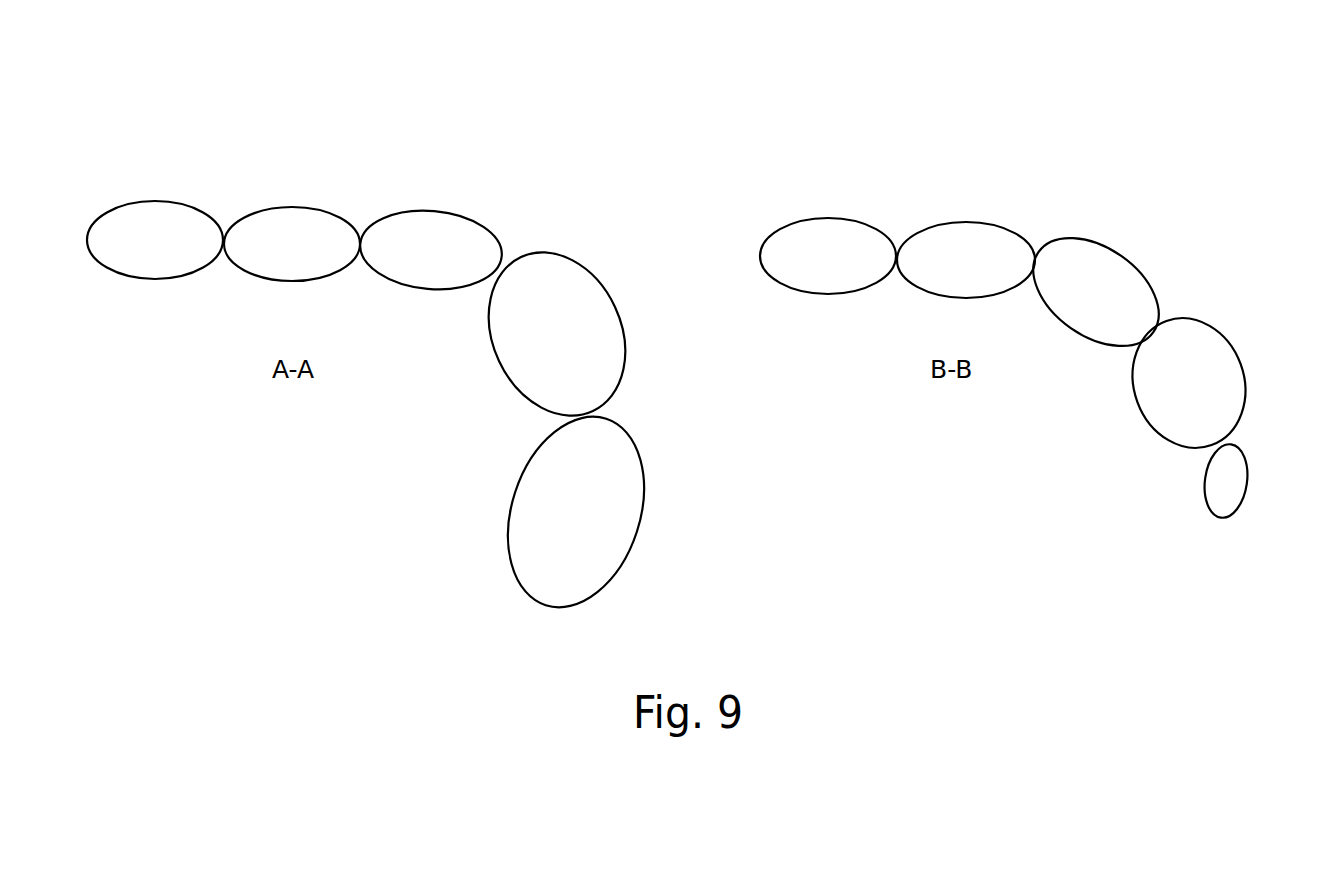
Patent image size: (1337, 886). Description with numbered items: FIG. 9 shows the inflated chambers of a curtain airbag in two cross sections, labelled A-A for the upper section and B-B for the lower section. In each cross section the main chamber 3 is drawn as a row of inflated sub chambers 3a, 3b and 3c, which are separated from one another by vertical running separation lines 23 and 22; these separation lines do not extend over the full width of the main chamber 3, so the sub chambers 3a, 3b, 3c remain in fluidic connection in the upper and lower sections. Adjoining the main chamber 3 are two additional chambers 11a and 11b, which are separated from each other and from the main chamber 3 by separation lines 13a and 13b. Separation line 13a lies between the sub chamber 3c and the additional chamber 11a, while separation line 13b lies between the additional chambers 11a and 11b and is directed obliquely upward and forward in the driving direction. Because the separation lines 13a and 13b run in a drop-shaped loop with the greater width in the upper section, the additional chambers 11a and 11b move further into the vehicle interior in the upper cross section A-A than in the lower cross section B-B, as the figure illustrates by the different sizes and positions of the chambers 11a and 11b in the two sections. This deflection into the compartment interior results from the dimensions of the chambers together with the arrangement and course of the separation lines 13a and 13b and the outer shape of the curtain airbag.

The main chamber 3 is at (262, 155).
The sub chamber 3a is at (128, 235).
The separation line 23 is at (223, 230).
The sub chamber 3b is at (297, 237).
The separation line 22 is at (362, 237).
The sub chamber 3c is at (432, 240).
The separation line 13a is at (502, 268).
The additional chamber 11a is at (595, 338).
The separation line 13b is at (585, 417).
The additional chamber 11b is at (608, 538).